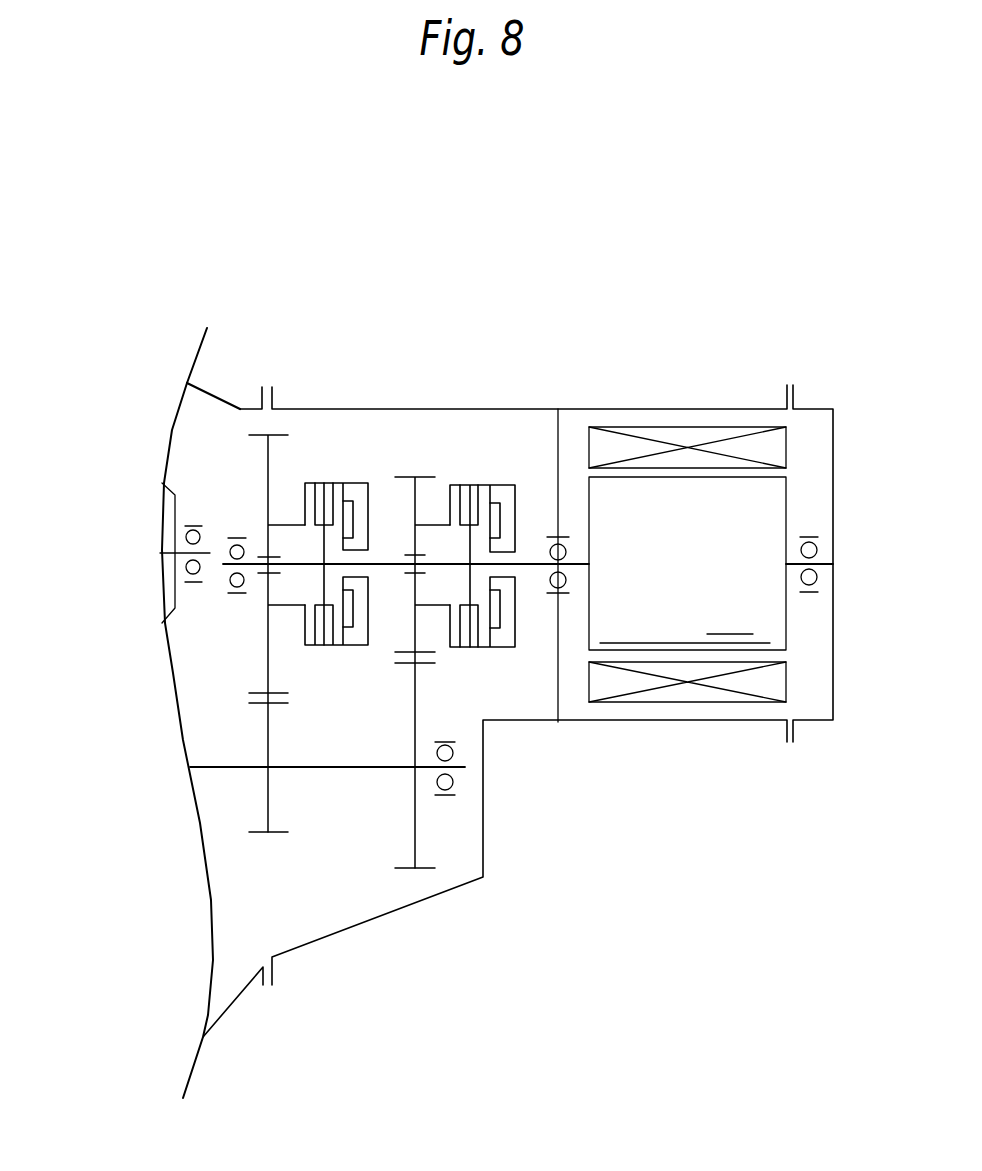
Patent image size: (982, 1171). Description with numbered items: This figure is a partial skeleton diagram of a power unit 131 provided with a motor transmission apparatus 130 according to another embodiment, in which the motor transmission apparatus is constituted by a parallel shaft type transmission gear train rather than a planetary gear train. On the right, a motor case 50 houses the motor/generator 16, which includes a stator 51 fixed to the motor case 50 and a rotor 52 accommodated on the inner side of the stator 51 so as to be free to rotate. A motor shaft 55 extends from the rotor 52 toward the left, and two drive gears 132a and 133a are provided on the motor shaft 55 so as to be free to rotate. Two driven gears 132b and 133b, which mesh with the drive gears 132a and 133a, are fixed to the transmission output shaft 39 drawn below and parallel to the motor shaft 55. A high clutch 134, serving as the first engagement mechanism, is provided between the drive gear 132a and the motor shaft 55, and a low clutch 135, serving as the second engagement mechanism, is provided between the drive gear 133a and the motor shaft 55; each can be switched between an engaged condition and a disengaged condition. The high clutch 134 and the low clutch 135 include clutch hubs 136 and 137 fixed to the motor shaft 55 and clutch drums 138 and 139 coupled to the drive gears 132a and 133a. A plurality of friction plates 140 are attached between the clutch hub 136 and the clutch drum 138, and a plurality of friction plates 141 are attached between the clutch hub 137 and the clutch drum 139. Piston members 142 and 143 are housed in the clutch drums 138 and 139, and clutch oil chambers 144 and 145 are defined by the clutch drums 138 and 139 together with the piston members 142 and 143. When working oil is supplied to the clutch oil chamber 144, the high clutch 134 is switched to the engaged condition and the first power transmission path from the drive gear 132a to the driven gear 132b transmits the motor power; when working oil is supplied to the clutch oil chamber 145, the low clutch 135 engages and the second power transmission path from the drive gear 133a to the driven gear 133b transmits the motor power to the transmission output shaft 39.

The motor transmission apparatus 130 is at (227, 457).
The power unit 131 is at (663, 270).
The motor/generator 16 is at (729, 471).
The motor case 50 is at (693, 408).
The stator 51 is at (745, 445).
The rotor 52 is at (747, 533).
The motor shaft 55 is at (572, 560).
The transmission output shaft 39 is at (217, 768).
The drive gear 133a is at (255, 430).
The driven gear 133b is at (255, 835).
The drive gear 132a is at (403, 470).
The driven gear 132b is at (424, 869).
The low clutch 135 is at (363, 483).
The high clutch 134 is at (485, 478).
The clutch drum 139 is at (335, 475).
The clutch drum 138 is at (450, 485).
The friction plates 141 is at (323, 500).
The piston member 143 is at (353, 523).
The piston member 142 is at (503, 518).
The clutch hub 137 is at (297, 647).
The clutch oil chamber 145 is at (358, 648).
The clutch hub 136 is at (440, 607).
The friction plates 140 is at (472, 630).
The clutch oil chamber 144 is at (507, 628).